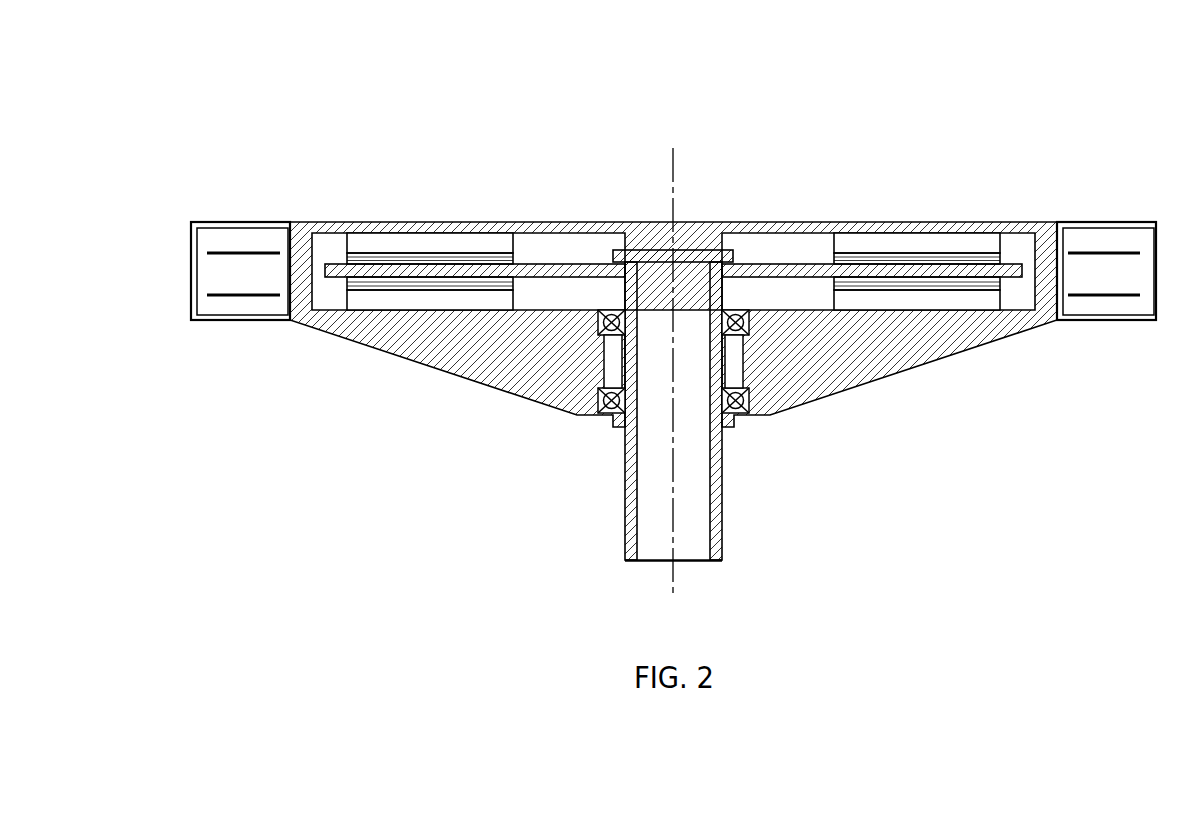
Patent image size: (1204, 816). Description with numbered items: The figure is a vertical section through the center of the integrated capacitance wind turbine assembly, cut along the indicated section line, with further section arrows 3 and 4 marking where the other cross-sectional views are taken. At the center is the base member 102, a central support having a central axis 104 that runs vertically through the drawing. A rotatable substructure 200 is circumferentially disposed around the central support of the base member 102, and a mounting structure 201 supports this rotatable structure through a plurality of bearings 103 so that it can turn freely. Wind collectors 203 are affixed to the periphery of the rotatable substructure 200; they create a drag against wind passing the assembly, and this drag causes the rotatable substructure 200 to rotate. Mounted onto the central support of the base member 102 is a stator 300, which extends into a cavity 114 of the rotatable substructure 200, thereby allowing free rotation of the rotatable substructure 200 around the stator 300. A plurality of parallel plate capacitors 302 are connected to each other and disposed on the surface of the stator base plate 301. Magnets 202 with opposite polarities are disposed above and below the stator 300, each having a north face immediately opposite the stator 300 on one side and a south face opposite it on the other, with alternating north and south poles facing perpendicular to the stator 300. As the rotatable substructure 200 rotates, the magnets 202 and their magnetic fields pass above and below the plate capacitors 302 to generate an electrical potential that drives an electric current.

The rotatable substructure 200 is at (399, 98).
The mounting structure 201 is at (525, 398).
The magnets 202 is at (445, 243).
The wind collectors 203 is at (233, 222).
The cavity 114 is at (326, 262).
The parallel plate capacitors 302 is at (346, 253).
The stator base plate 301 is at (655, 250).
The stator 300 is at (753, 242).
The central axis 104 is at (676, 165).
The bearings 103 is at (737, 418).
The base member 102 is at (722, 500).
The section line 3 is at (674, 329).
The section line 4 is at (669, 287).